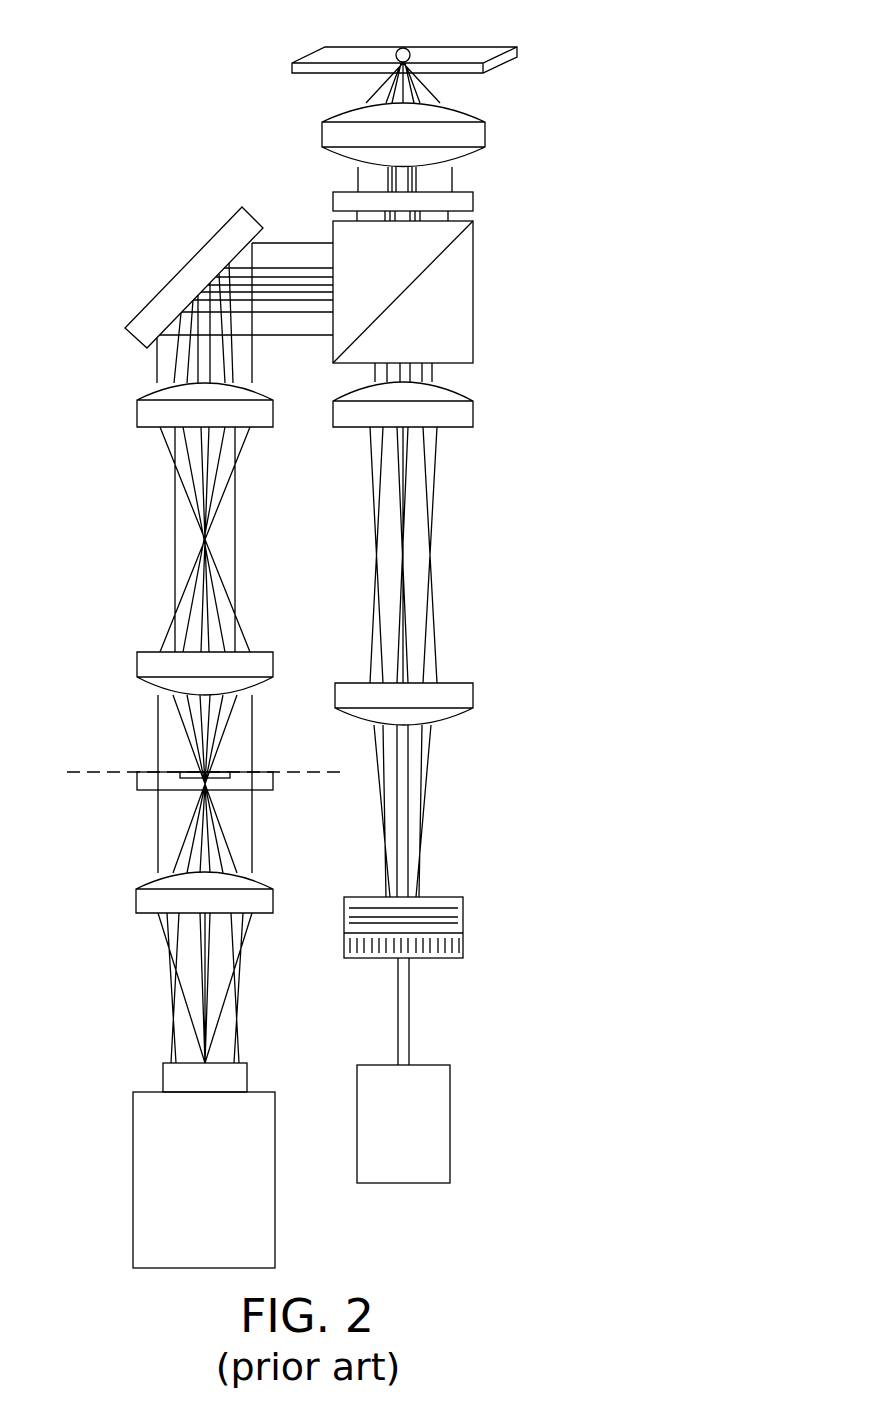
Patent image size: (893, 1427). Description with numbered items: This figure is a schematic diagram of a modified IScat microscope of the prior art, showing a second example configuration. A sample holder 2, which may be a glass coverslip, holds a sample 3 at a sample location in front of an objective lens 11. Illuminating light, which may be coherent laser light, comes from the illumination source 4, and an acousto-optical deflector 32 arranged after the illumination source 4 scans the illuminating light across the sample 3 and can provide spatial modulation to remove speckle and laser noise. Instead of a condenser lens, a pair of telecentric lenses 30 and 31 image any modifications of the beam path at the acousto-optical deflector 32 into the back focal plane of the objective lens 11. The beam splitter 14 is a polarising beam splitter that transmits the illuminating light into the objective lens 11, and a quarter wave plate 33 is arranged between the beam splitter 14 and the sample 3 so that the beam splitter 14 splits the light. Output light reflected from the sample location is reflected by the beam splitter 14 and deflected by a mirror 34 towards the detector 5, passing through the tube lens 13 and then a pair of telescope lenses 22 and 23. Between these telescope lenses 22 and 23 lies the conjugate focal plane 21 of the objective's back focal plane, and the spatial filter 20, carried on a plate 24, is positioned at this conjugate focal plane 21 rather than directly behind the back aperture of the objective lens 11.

The sample holder 2 is at (500, 62).
The sample 3 is at (330, 53).
The objective lens 11 is at (340, 138).
The quarter wave plate 33 is at (468, 203).
The beam splitter 14 is at (458, 303).
The mirror 34 is at (172, 297).
The tube lens 13 is at (148, 410).
The telecentric lens 31 is at (460, 413).
The telescope lens 22 is at (145, 660).
The telecentric lens 30 is at (460, 695).
The conjugate focal plane 21 is at (317, 777).
The aperture plate 24 is at (148, 785).
The spatial filter 20 is at (190, 770).
The telescope lens 23 is at (145, 902).
The acousto-optical deflector 32 is at (460, 912).
The detector 5 is at (167, 1170).
The illumination source 4 is at (428, 1135).